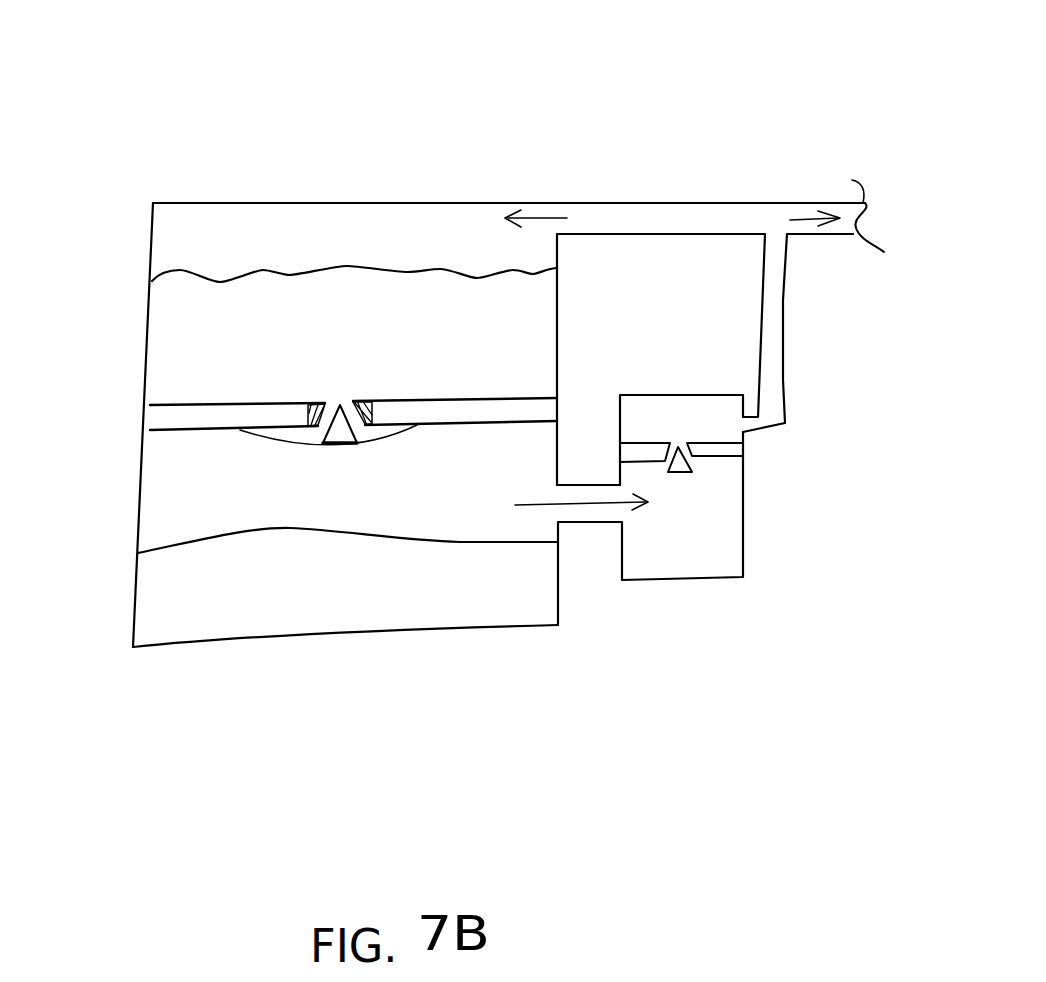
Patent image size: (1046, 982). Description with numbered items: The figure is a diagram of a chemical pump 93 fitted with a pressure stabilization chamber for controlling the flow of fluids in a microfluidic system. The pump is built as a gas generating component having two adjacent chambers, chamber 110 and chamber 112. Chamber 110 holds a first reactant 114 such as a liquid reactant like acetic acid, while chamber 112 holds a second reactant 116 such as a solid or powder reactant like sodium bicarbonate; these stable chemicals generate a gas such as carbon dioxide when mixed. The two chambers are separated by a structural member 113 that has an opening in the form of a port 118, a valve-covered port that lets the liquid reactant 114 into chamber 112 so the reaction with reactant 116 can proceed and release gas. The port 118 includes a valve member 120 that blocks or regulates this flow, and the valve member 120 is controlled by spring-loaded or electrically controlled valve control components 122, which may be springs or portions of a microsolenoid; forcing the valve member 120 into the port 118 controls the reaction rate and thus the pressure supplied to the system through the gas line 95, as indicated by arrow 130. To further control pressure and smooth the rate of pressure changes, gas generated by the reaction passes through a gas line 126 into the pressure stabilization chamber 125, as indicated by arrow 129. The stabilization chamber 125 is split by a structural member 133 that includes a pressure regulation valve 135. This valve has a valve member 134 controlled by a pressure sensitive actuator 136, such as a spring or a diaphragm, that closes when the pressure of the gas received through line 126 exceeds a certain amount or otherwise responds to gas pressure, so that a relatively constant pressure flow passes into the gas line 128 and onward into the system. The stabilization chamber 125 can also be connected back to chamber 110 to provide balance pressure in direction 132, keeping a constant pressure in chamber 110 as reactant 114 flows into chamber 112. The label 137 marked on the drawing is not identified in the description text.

The pump 93 is at (519, 70).
The gas line 95 is at (892, 133).
The chamber 110 is at (150, 236).
The chamber 112 is at (138, 477).
The structural member 113 is at (140, 410).
The first reactant 114 is at (148, 322).
The second reactant 116 is at (145, 567).
The port 118 is at (353, 375).
The valve member 120 is at (342, 441).
The valve control components 122 is at (318, 404).
The pressure stabilization chamber 125 is at (708, 578).
The gas line 126 is at (593, 525).
The gas line 128 is at (790, 366).
The arrow 129 is at (585, 500).
The arrow 130 is at (806, 217).
The direction 132 is at (545, 215).
The structural member 133 is at (742, 443).
The valve member 134 is at (683, 473).
The pressure regulation valve 135 is at (663, 435).
The pressure sensitive actuator 136 is at (676, 447).
The main channel 137 is at (666, 205).